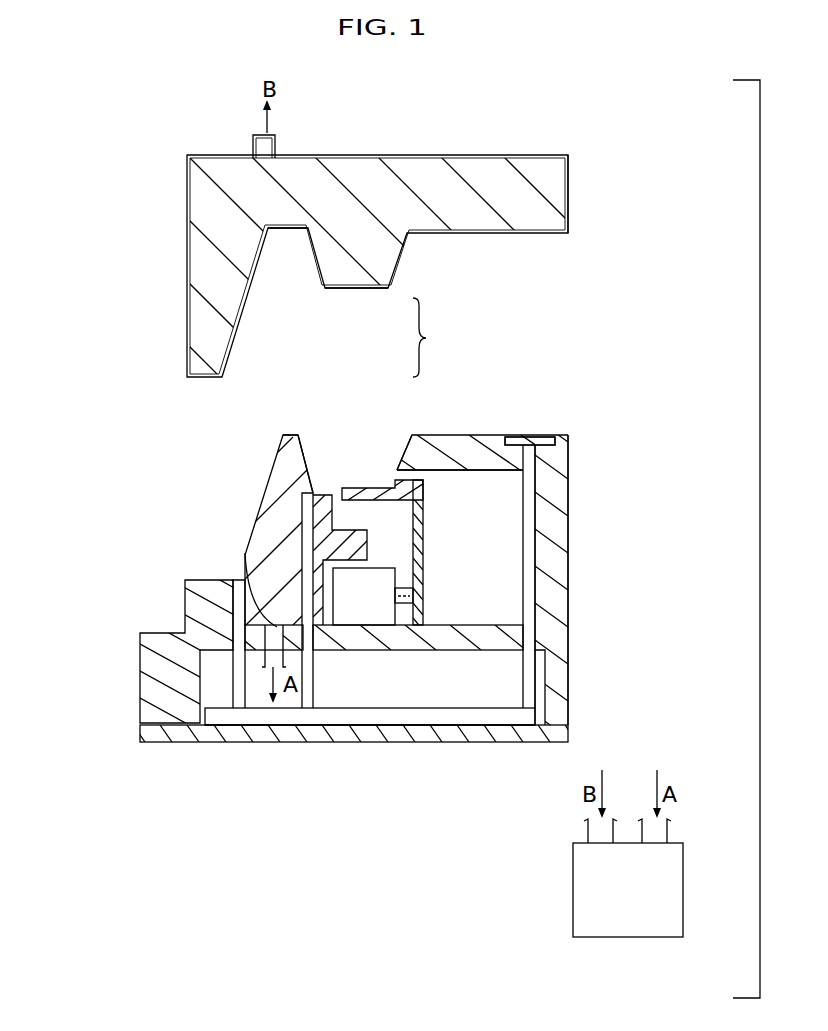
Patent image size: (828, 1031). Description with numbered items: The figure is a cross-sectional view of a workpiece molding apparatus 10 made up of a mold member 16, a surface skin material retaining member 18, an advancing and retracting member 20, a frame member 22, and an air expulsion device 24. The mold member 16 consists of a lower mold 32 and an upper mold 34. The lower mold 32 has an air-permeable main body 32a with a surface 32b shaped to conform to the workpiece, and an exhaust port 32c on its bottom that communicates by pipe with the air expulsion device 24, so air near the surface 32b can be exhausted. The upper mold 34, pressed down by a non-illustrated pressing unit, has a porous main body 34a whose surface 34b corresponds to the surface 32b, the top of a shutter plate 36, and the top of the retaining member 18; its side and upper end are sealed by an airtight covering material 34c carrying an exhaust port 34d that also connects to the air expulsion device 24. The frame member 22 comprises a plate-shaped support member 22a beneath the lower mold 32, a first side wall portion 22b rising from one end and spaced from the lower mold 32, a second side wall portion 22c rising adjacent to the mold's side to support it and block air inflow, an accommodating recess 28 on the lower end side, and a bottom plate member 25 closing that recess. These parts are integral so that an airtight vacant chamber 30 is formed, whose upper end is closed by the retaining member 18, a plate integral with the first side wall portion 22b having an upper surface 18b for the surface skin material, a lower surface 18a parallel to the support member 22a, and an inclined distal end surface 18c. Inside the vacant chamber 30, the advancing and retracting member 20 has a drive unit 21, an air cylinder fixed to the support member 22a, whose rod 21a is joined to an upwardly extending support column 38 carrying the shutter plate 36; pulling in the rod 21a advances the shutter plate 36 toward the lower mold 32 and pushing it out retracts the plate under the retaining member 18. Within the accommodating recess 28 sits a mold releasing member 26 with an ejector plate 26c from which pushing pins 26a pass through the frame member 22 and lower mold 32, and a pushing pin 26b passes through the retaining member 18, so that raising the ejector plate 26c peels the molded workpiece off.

The workpiece molding apparatus 10 is at (105, 113).
The mold member 16 is at (432, 337).
The surface skin material retaining member 18 is at (447, 432).
The lower surface 18a is at (442, 472).
The upper surface 18b is at (471, 434).
The distal end surface 18c is at (403, 450).
The advancing and retracting member 20 is at (433, 534).
The drive unit 21 is at (368, 613).
The rod 21a is at (417, 600).
The frame member 22 is at (562, 585).
The support member 22a is at (393, 643).
The first side wall portion 22b is at (563, 540).
The second side wall portion 22c is at (198, 603).
The air expulsion device 24 is at (675, 892).
The bottom plate member 25 is at (520, 733).
The mold releasing member 26 is at (422, 715).
The pushing pins 26a is at (233, 677).
The pushing pin 26b is at (527, 505).
The ejector plate 26c is at (470, 715).
The accommodating recess 28 is at (543, 672).
The vacant chamber 30 is at (510, 602).
The lower mold 32 is at (313, 449).
The main body 32a is at (290, 460).
The surface 32b is at (285, 436).
The exhaust port 32c is at (245, 565).
The upper mold 34 is at (355, 299).
The main body 34a is at (286, 215).
The surface 34b is at (317, 273).
The covering material 34c is at (573, 197).
The exhaust port 34d is at (276, 149).
The shutter plate 36 is at (398, 492).
The support column 38 is at (418, 563).